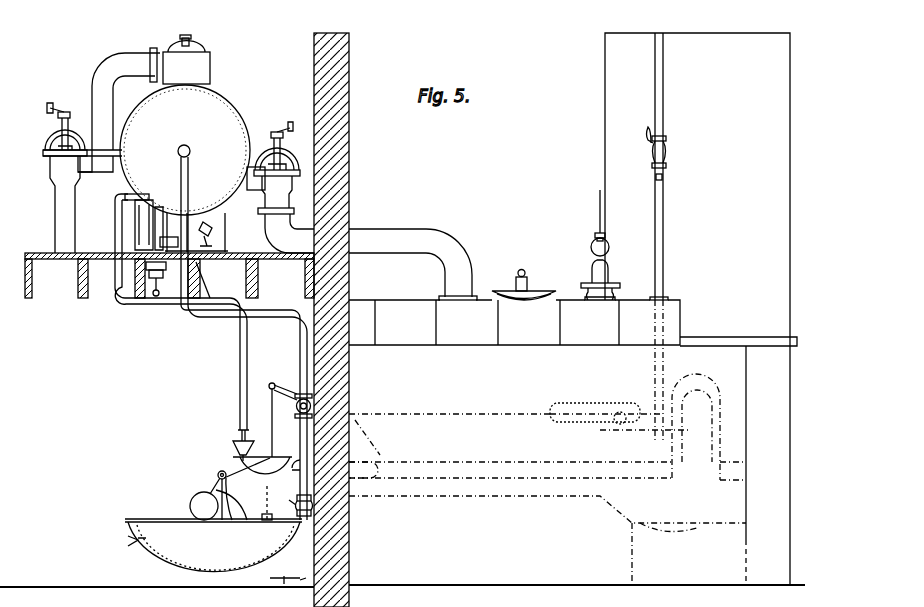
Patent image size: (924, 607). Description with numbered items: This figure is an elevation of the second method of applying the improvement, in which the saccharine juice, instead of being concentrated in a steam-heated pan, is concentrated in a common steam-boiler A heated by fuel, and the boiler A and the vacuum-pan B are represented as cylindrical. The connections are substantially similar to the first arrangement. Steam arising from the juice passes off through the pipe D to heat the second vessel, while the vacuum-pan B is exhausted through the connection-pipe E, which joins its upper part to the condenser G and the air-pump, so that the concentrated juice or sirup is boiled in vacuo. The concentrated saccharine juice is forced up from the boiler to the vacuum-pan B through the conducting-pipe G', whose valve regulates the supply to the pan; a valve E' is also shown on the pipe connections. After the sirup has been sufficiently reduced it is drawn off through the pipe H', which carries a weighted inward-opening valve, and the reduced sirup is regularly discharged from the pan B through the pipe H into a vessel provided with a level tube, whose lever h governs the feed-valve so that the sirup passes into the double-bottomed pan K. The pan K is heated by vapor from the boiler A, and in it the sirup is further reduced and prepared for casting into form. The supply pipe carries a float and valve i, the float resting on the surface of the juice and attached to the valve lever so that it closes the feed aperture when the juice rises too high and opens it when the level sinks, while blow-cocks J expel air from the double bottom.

The boiler A is at (514, 308).
The vacuum-pan B is at (192, 125).
The pipe D is at (413, 264).
The connection-pipe E is at (101, 112).
The valve E' is at (65, 178).
The pipe H is at (190, 225).
The pipe H' is at (177, 327).
The condenser G is at (244, 410).
The conducting-pipe G' is at (301, 430).
The lever h is at (283, 417).
The float and valve i is at (605, 419).
The blow-cocks J is at (262, 488).
The double-bottomed pan K is at (215, 551).